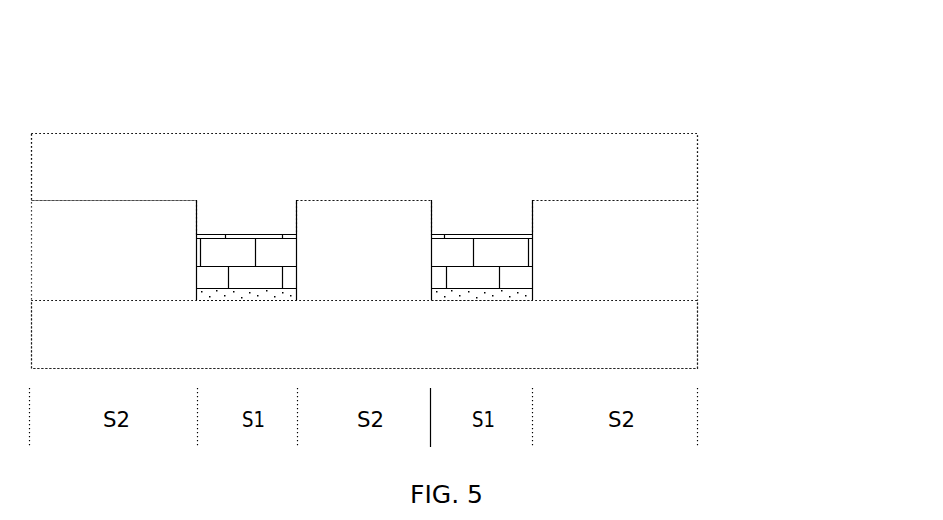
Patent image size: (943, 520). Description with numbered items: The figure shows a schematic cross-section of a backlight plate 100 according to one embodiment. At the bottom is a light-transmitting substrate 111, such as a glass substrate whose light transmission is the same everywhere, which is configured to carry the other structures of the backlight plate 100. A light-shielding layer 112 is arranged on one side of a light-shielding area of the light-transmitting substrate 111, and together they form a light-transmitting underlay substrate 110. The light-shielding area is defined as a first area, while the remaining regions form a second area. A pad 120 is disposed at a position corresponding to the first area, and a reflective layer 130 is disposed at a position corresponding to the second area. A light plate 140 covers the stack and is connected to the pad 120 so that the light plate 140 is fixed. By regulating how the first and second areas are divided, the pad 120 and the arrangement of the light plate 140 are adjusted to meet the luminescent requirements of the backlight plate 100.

The backlight plate 100 is at (360, 89).
The light-transmitting underlay substrate 110 is at (782, 268).
The light-transmitting substrate 111 is at (682, 353).
The light-shielding layer 112 is at (514, 293).
The pad 120 is at (486, 257).
The reflective layer 130 is at (682, 238).
The light plate 140 is at (682, 165).